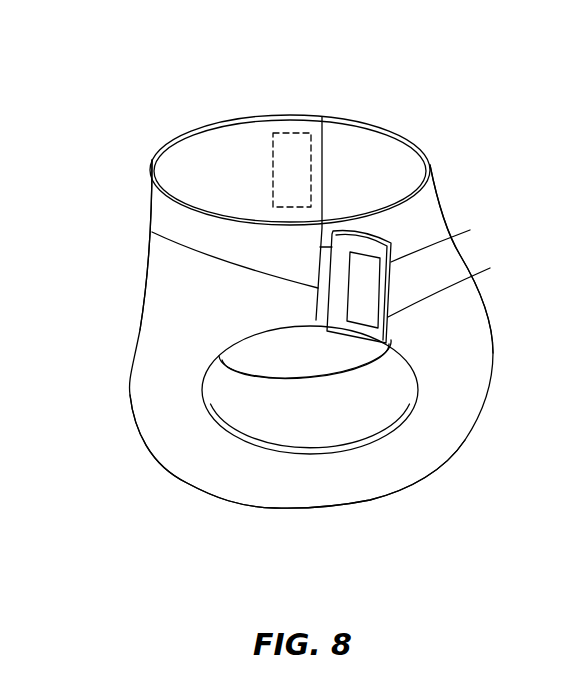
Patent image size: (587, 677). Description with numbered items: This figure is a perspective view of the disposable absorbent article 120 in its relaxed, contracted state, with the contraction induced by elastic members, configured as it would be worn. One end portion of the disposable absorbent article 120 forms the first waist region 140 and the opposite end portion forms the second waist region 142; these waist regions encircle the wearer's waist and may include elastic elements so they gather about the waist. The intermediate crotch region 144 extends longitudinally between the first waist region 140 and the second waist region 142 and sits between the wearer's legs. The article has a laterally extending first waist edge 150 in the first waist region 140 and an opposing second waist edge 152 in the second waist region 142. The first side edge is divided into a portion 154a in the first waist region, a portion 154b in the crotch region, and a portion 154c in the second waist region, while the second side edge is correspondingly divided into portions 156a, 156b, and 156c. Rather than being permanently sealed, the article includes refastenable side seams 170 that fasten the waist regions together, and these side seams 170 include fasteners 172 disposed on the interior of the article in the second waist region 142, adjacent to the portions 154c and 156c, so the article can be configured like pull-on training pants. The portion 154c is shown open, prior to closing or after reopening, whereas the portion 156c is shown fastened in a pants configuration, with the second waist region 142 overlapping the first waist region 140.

The disposable absorbent article 120 is at (66, 298).
The first waist region 140 is at (110, 175).
The second waist region 142 is at (470, 194).
The crotch region 144 is at (204, 510).
The first waist edge 150 is at (158, 153).
The second waist edge 152 is at (428, 153).
The portion of first side edge in first waist region 154a is at (152, 232).
The portion of first side edge in crotch region 154b is at (280, 457).
The portion of first side edge in second waist region 154c is at (470, 230).
The portion of second side edge in first waist region 156a is at (325, 140).
The portion of second side edge in crotch region 156b is at (325, 385).
The portion of second side edge in second waist region 156c is at (268, 117).
The refastenable side seam 170 is at (282, 97).
The fastener 172 is at (490, 268).